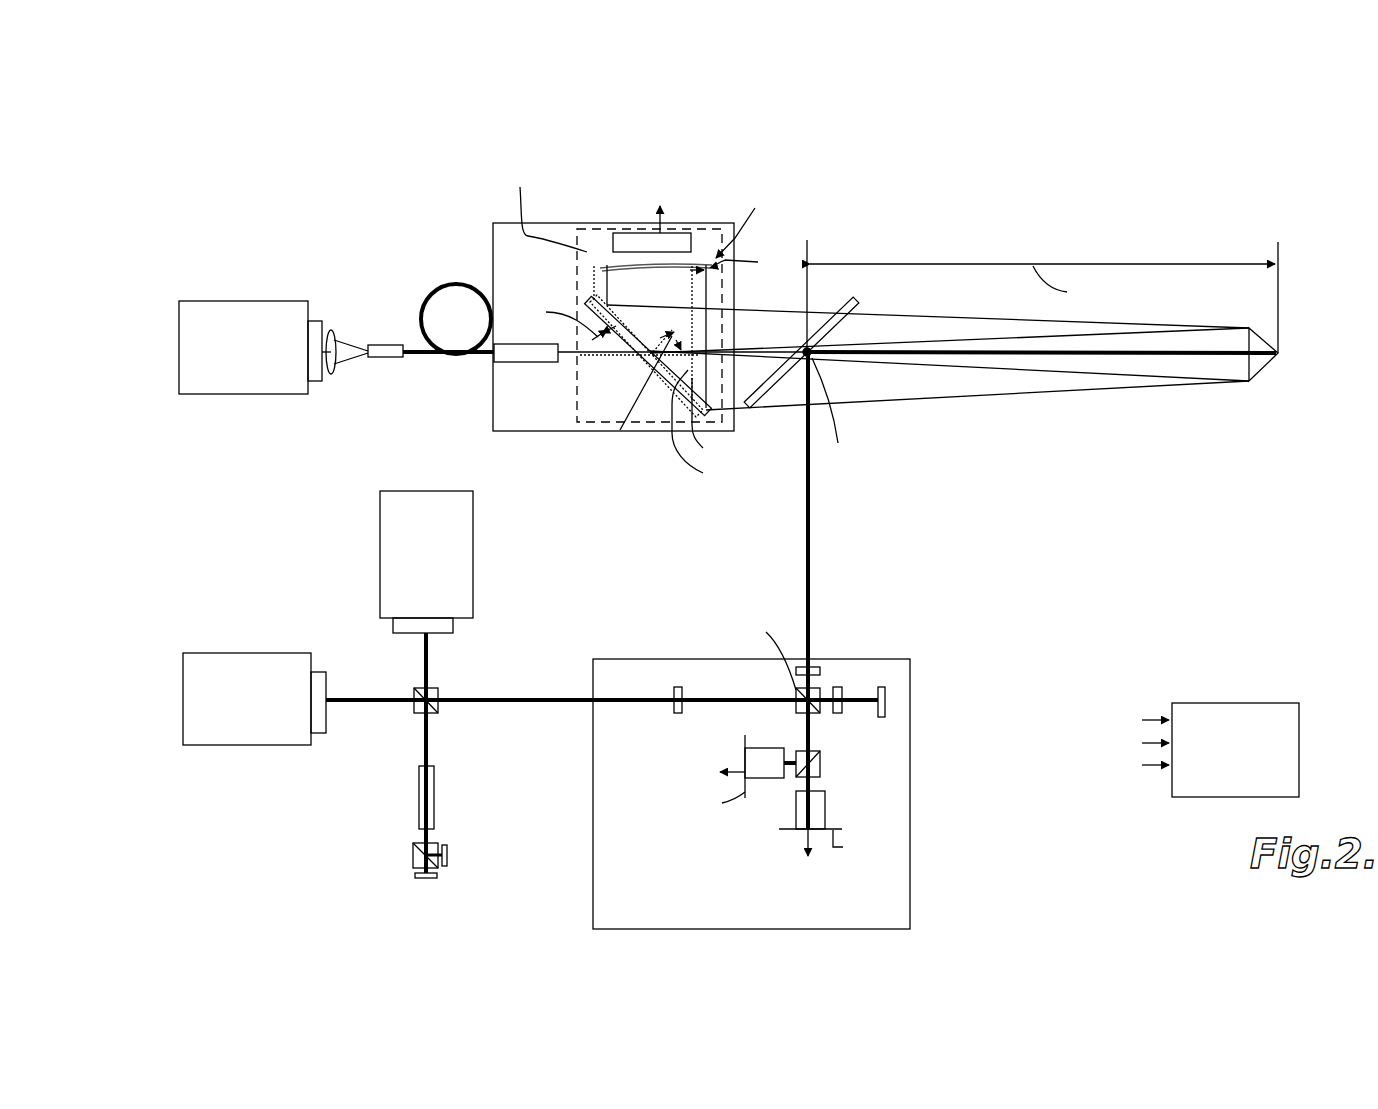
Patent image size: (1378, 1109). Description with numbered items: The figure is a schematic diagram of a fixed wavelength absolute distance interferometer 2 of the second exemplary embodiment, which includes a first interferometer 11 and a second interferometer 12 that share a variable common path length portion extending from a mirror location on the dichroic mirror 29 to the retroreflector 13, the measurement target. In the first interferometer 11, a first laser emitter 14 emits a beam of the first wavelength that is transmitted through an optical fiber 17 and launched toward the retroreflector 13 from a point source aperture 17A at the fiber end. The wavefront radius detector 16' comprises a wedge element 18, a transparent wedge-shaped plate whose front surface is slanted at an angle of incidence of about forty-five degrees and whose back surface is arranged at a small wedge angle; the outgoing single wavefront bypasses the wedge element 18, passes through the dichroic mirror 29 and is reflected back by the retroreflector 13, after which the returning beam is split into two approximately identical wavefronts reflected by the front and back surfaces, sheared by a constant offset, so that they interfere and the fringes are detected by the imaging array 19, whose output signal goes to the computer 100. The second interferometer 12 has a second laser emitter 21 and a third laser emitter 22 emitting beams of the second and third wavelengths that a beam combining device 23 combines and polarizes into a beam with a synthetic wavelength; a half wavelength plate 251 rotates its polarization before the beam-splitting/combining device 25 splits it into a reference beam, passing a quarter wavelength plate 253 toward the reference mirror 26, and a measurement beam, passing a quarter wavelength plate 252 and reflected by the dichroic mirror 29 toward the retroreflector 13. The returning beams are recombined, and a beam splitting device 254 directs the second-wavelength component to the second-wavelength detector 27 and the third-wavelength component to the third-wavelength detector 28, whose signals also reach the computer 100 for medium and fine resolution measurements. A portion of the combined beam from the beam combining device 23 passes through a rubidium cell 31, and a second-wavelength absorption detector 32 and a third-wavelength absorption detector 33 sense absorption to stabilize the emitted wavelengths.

The fixed wavelength absolute distance interferometer 2 is at (1258, 502).
The first interferometer 11 is at (668, 370).
The second interferometer 12 is at (751, 794).
The retroreflector 13 is at (1263, 358).
The first laser emitter 14 is at (179, 337).
The wavefront radius detector 16' is at (629, 343).
The optical fiber 17 is at (441, 287).
The point source aperture 17A is at (533, 363).
The wedge element 18 is at (588, 297).
The imaging array 19 is at (648, 237).
The second laser emitter 21 is at (380, 517).
The third laser emitter 22 is at (183, 690).
The beam combining device 23 is at (438, 688).
The beam-splitting/combining device 25 is at (820, 713).
The reference mirror 26 is at (886, 704).
The λ2 detector 27 is at (760, 748).
The λ3 detector 28 is at (825, 805).
The dichroic mirror 29 is at (858, 296).
The rubidium cell 31 is at (419, 795).
The λ2 absorption detector 32 is at (427, 878).
The λ3 absorption detector 33 is at (448, 853).
The computer 100 is at (1235, 750).
The half wavelength plate 251 is at (678, 687).
The quarter wavelength plate 252 is at (805, 667).
The quarter wavelength plate 253 is at (836, 687).
The beam splitting device 254 is at (822, 762).